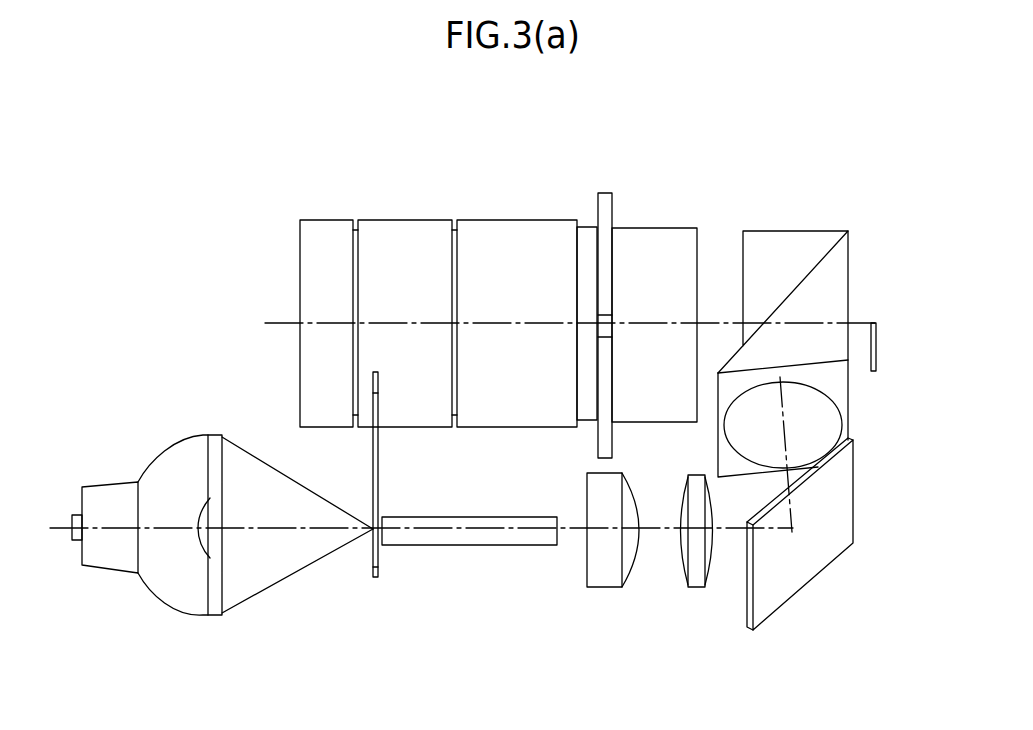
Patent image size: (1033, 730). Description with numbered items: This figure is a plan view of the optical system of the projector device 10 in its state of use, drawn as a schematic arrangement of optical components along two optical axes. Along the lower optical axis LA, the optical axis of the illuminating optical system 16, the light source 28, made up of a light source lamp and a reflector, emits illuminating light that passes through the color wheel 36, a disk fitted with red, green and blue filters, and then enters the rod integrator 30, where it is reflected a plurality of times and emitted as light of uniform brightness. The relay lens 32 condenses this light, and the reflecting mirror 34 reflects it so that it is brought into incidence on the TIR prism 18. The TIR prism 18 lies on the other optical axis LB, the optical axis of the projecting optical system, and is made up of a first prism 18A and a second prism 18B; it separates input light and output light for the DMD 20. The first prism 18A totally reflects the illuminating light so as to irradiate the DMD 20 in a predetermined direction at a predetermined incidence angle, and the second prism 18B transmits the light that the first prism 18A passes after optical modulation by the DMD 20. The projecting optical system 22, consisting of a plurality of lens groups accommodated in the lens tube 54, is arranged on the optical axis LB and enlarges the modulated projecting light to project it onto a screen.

The projector device 10 is at (240, 190).
The illuminating optical system 16 is at (315, 664).
The TIR prism 18 is at (828, 194).
The first prism 18A is at (831, 295).
The second prism 18B is at (772, 253).
The DMD 20 is at (876, 350).
The projecting optical system 22 is at (517, 188).
The light source 28 is at (181, 580).
The rod integrator 30 is at (535, 545).
The relay lens 32 is at (610, 575).
The reflecting mirror 34 is at (823, 558).
The color wheel 36 is at (380, 577).
The lens tube 54 is at (553, 233).
The optical axis of the illuminating optical system LA is at (300, 529).
The optical axis of the projecting optical system LB is at (440, 322).